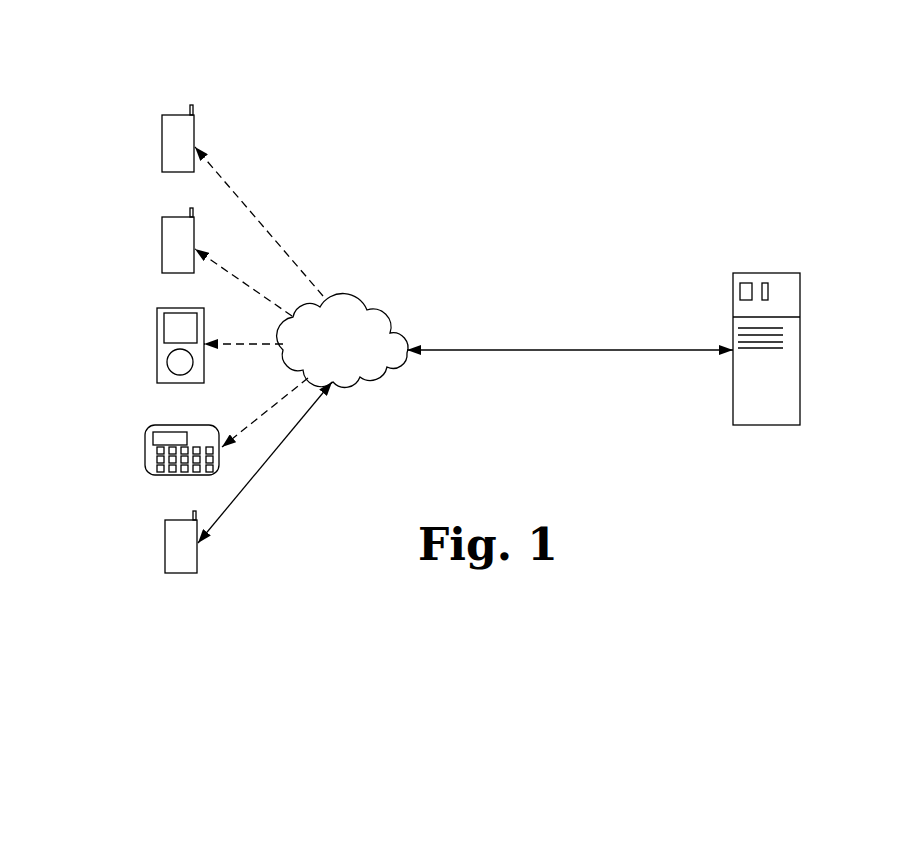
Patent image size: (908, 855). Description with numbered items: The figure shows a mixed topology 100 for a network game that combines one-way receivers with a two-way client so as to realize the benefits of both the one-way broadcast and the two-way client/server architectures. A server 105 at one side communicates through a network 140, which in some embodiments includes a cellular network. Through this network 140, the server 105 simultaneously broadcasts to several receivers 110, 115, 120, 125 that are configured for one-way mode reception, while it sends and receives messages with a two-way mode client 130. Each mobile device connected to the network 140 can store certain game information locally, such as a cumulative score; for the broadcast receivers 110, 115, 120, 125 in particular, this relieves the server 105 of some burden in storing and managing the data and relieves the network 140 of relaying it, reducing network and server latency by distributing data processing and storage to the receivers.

The mixed topology 100 is at (826, 133).
The server 105 is at (768, 425).
The receiver 110 is at (162, 146).
The receiver 115 is at (162, 247).
The receiver 120 is at (157, 345).
The receiver 125 is at (145, 452).
The two-way mode client 130 is at (165, 548).
The network 140 is at (341, 293).